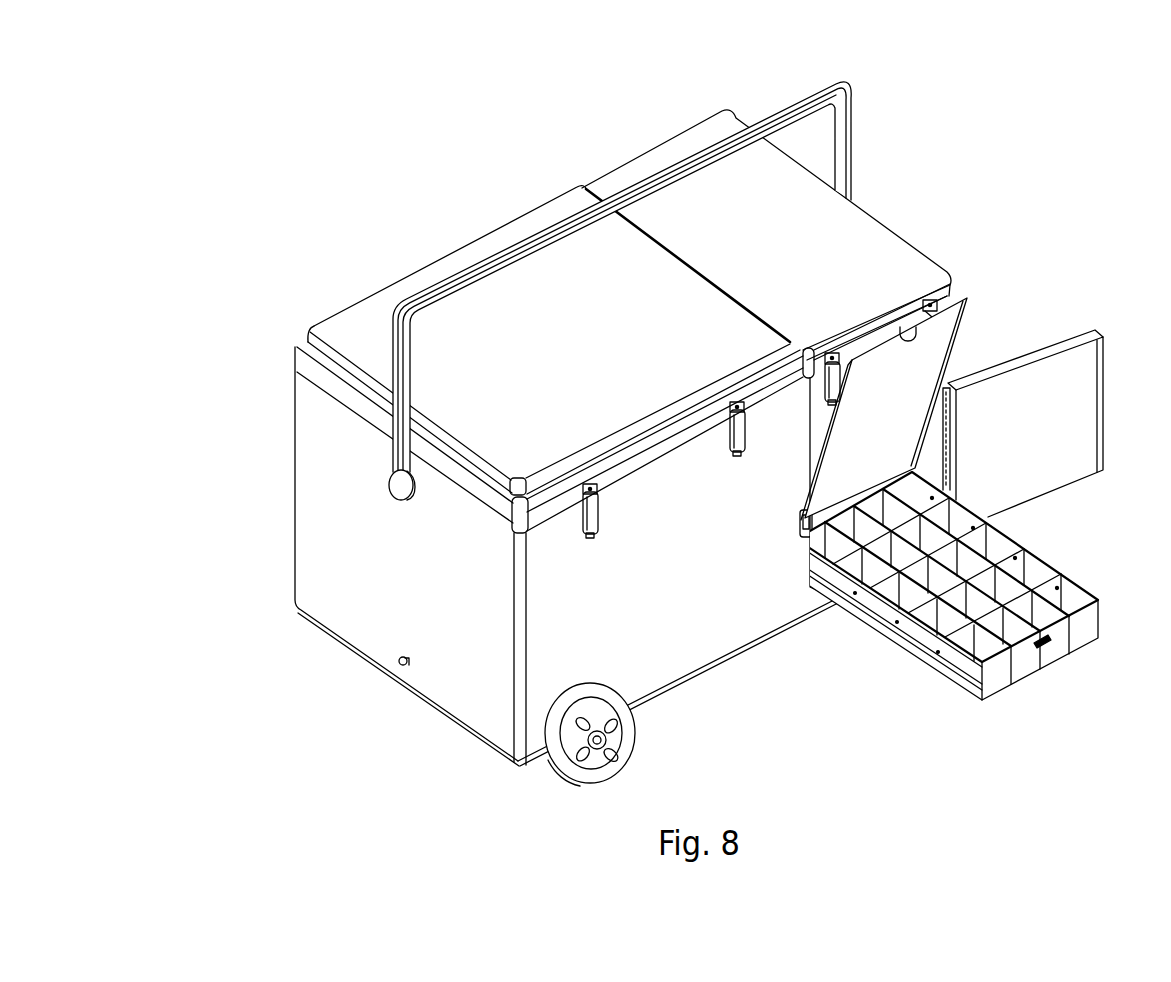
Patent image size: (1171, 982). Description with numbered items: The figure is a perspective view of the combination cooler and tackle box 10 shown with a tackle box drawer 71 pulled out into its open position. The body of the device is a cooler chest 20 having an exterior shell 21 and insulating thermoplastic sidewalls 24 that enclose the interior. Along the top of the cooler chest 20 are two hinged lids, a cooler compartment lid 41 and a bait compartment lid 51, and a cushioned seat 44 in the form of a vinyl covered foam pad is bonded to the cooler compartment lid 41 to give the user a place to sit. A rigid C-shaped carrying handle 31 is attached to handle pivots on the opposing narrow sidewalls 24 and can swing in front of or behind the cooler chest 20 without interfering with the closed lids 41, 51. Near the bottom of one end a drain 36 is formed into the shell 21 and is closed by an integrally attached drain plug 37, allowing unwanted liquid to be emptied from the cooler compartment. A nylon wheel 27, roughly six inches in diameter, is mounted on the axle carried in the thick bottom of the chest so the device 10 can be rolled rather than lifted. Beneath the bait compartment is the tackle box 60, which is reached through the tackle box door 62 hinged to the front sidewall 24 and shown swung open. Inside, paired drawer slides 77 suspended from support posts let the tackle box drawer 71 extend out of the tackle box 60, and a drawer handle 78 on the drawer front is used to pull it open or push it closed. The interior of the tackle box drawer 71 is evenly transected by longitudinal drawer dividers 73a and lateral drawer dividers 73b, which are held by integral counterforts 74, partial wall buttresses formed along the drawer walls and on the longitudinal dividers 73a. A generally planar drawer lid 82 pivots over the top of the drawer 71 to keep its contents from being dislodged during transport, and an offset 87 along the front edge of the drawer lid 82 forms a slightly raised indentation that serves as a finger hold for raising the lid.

The combination cooler and tackle box 10 is at (361, 180).
The cooler chest 20 is at (292, 596).
The exterior shell 21 is at (295, 448).
The sidewalls 24 is at (317, 512).
The wheel 27 is at (623, 747).
The carrying handle 31 is at (850, 135).
The drain 36 is at (407, 668).
The drain plug 37 is at (399, 663).
The cooler compartment lid 41 is at (300, 347).
The cushioned seat 44 is at (368, 303).
The bait compartment lid 51 is at (912, 243).
The tackle box 60 is at (826, 644).
The tackle box door 62 is at (1093, 343).
The tackle box drawer 71 is at (1090, 630).
The longitudinal drawer divider 73a is at (1057, 603).
The lateral drawer divider 73b is at (1038, 572).
The counterfort 74 is at (1057, 568).
The drawer slides 77 is at (950, 660).
The drawer handle 78 is at (1043, 648).
The drawer lid 82 is at (950, 322).
The offset 87 is at (914, 338).